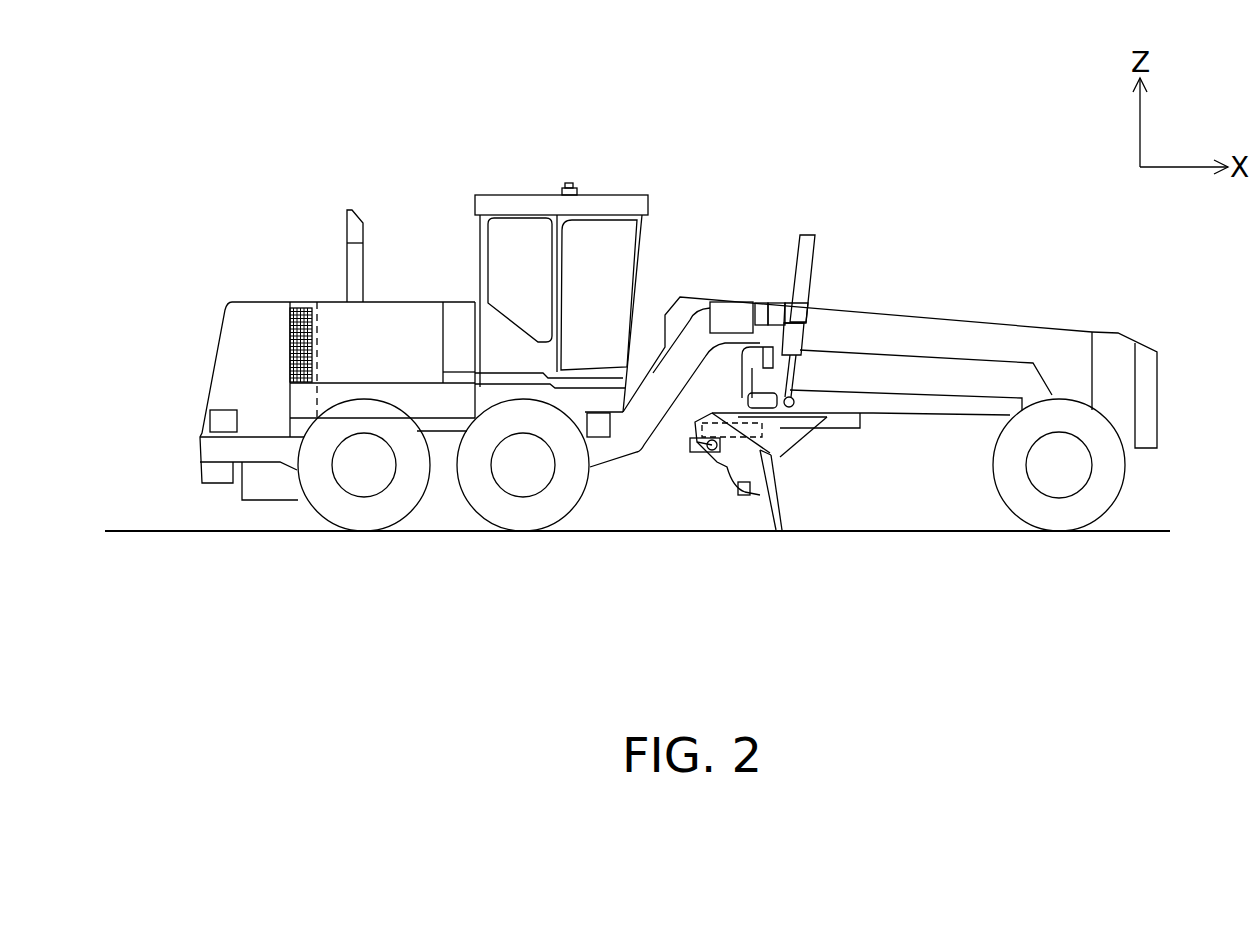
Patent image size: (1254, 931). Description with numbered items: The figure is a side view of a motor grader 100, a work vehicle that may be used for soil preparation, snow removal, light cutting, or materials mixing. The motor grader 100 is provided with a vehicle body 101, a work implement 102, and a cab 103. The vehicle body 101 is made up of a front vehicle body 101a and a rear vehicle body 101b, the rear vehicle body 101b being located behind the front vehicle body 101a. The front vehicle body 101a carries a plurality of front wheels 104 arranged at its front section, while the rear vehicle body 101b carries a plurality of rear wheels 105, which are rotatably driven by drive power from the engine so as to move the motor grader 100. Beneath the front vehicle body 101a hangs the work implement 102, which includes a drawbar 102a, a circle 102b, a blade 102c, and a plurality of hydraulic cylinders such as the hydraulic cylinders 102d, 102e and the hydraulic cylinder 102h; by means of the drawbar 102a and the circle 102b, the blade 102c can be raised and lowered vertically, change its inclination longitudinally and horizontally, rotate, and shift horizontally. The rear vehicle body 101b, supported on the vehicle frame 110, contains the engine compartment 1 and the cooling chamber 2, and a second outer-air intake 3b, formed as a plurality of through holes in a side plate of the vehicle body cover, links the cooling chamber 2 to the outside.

The engine compartment 1 is at (390, 312).
The cooling chamber 2 is at (272, 325).
The second outer-air intake 3b is at (302, 310).
The motor grader 100 is at (918, 180).
The vehicle body 101 is at (693, 262).
The front vehicle body 101a is at (930, 317).
The rear vehicle body 101b is at (410, 272).
The work implement 102 is at (828, 507).
The drawbar 102a is at (960, 414).
The circle 102b is at (848, 430).
The blade 102c is at (780, 505).
The hydraulic cylinder 102d is at (806, 236).
The hydraulic cylinder 102e is at (811, 230).
The hydraulic cylinder 102h is at (727, 480).
The cab 103 is at (508, 197).
The front wheel 104 is at (1066, 518).
The rear wheel 105 is at (374, 518).
The vehicle frame 110 is at (272, 470).